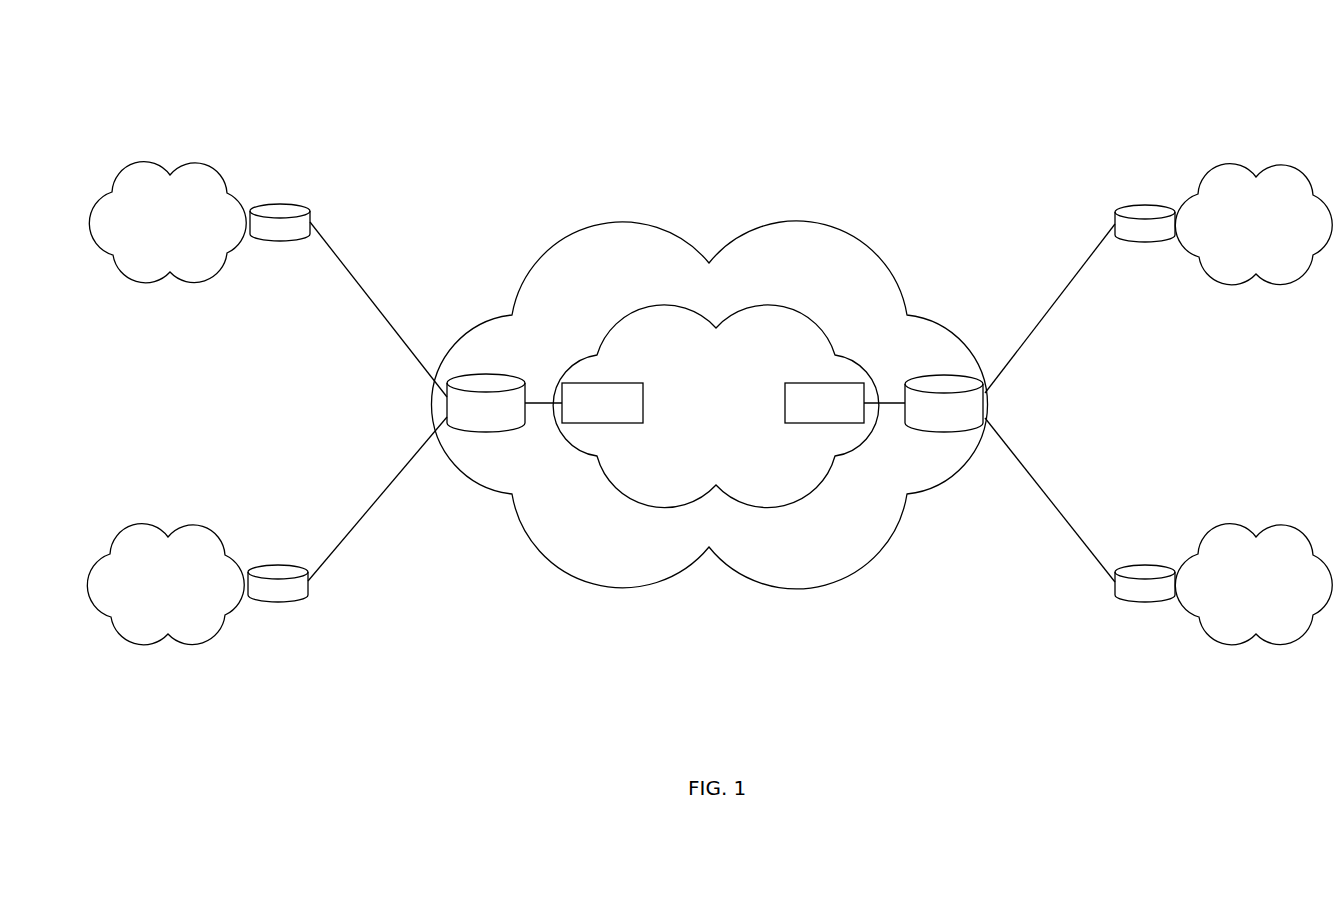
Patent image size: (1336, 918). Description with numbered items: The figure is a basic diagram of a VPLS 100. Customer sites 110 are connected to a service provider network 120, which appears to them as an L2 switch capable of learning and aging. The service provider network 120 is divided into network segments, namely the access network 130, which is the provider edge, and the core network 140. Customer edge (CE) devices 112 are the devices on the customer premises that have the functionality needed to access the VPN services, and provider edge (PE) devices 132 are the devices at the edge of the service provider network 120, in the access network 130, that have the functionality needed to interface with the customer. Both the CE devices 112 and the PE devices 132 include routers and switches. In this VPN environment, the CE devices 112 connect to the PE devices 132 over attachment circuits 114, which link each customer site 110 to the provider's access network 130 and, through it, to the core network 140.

The VPLS 100 is at (876, 97).
The customer sites 110 is at (178, 203).
The customer edge (CE) devices 112 is at (280, 204).
The attachment circuits 114 is at (344, 266).
The service provider network 120 is at (840, 234).
The access network 130 is at (784, 287).
The provider edge (PE) devices 132 is at (487, 374).
The core network 140 is at (754, 365).